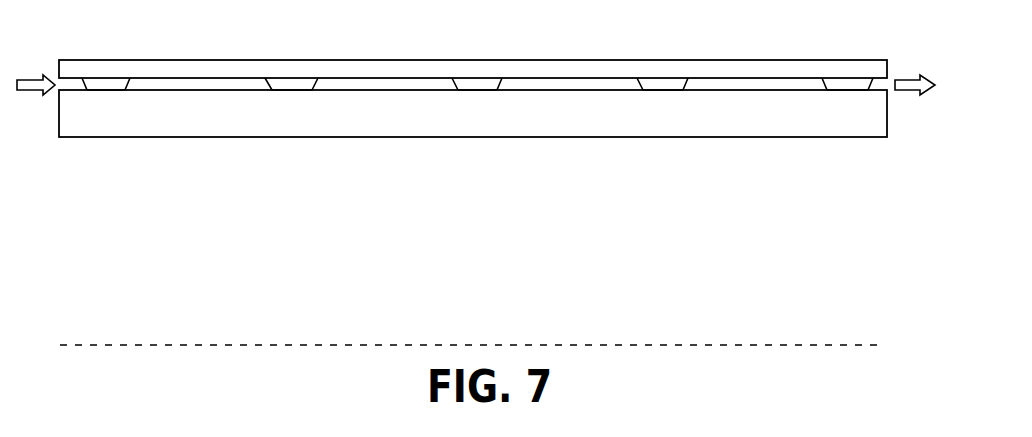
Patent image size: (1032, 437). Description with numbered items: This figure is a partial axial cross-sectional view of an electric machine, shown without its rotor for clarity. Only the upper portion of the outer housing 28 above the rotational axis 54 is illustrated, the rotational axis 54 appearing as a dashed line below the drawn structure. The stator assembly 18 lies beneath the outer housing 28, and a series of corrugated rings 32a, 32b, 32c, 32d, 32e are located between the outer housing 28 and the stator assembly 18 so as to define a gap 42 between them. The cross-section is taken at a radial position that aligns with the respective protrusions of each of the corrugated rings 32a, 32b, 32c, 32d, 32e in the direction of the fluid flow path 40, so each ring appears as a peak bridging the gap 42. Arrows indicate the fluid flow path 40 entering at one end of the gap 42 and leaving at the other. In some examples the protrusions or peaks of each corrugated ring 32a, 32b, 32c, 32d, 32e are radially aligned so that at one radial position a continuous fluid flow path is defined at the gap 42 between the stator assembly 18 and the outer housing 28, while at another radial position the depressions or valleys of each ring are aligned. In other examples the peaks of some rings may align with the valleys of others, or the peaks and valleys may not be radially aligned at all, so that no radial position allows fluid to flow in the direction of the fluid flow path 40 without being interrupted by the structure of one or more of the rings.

The stator assembly 18 is at (433, 125).
The outer housing 28 is at (547, 70).
The corrugated ring 32a is at (96, 82).
The corrugated ring 32b is at (292, 82).
The corrugated ring 32c is at (467, 82).
The corrugated ring 32d is at (663, 82).
The corrugated ring 32e is at (845, 82).
The fluid flow path 40 is at (27, 77).
The gap 42 is at (239, 85).
The rotational axis 54 is at (490, 346).